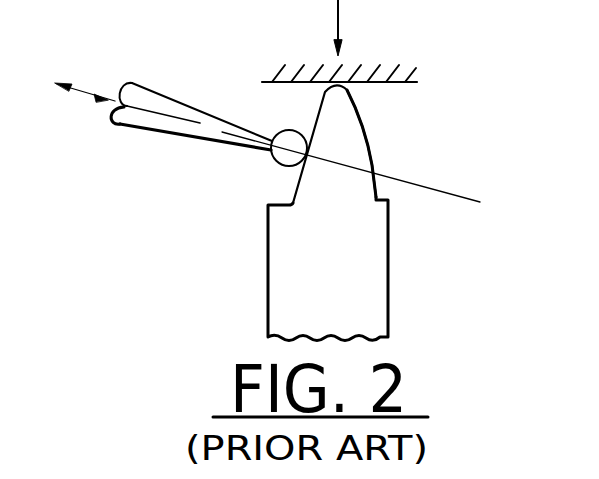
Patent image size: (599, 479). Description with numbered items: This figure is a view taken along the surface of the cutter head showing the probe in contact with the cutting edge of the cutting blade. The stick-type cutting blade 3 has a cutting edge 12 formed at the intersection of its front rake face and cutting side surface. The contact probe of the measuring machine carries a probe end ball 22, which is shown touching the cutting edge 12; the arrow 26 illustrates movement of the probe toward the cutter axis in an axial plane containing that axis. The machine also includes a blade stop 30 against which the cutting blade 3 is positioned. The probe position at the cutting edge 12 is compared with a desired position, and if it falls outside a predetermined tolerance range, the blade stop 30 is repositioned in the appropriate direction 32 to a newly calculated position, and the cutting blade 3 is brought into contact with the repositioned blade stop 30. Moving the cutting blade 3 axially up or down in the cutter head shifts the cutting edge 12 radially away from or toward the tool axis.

The cutting blade 3 is at (365, 287).
The cutting edge 12 is at (312, 130).
The probe end ball 22 is at (282, 166).
The arrow 26 is at (148, 110).
The blade stop 30 is at (385, 83).
The direction 32 is at (339, 12).